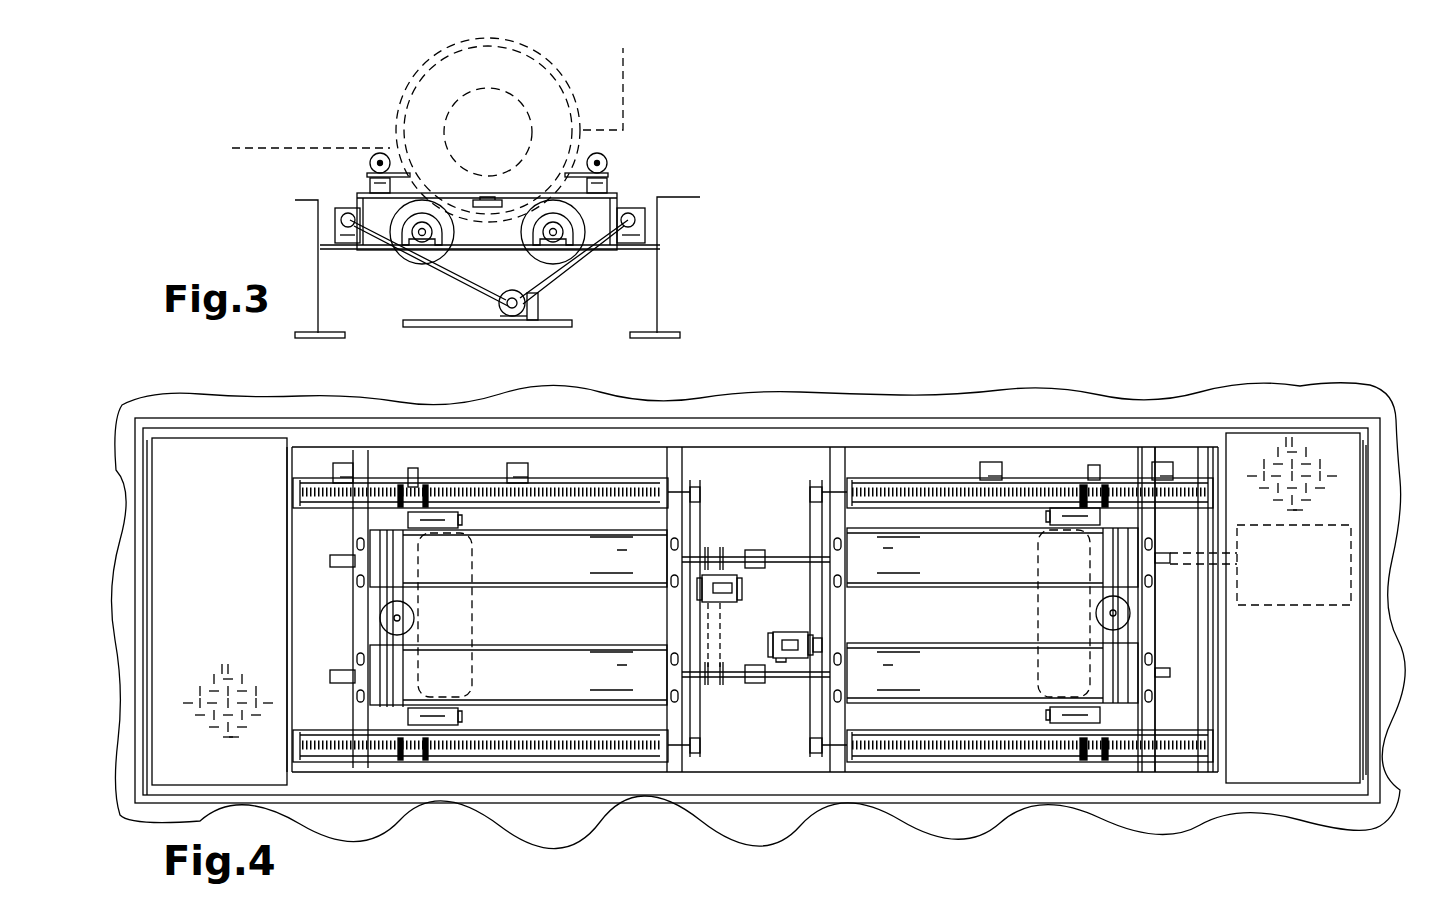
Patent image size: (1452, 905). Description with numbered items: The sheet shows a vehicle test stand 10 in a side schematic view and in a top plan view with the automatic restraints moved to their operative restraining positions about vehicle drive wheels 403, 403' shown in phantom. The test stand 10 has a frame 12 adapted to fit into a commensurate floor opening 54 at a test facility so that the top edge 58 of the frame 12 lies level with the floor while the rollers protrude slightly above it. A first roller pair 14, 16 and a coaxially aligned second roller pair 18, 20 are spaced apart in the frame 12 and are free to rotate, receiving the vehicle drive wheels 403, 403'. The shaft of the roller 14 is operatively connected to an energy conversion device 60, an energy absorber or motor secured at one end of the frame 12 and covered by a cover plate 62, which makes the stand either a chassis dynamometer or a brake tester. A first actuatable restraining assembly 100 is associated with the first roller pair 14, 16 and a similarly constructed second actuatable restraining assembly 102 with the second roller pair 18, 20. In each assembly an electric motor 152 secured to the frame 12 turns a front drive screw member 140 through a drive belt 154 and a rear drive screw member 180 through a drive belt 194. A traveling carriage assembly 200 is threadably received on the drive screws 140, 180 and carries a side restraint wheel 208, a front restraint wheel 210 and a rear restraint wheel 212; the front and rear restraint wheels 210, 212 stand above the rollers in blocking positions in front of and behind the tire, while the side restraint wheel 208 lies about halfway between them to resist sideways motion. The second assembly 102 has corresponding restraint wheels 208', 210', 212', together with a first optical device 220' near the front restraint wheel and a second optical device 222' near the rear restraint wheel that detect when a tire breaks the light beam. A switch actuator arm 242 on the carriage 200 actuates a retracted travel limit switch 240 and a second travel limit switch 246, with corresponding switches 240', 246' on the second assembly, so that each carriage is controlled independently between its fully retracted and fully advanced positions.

In FIG. 3, the vehicle test stand 10 is at (666, 170).
In FIG. 4, the vehicle test stand 10 is at (1045, 359).
In FIG. 3, the frame 12 is at (688, 197).
In FIG. 4, the frame 12 is at (908, 386).
In FIG. 4, the roller of first roller pair 14 is at (1012, 562).
In FIG. 4, the roller of first roller pair 16 is at (957, 662).
In FIG. 3, the roller of second roller pair 18 is at (546, 210).
In FIG. 4, the roller of second roller pair 18 is at (525, 562).
In FIG. 3, the roller of second roller pair 20 is at (365, 205).
In FIG. 4, the roller of second roller pair 20 is at (553, 670).
In FIG. 4, the floor opening 54 is at (1333, 416).
In FIG. 3, the top edge of the frame 58 is at (668, 195).
In FIG. 4, the top edge of the frame 58 is at (1193, 435).
In FIG. 4, the energy conversion device 60 is at (1314, 609).
In FIG. 4, the cover plate 62 is at (1328, 718).
In FIG. 4, the first actuatable restraining assembly 100 is at (1109, 459).
In FIG. 4, the second actuatable restraining assembly 102 is at (421, 460).
In FIG. 4, the front drive screw member 140 is at (952, 485).
In FIG. 3, the electric motor 152 is at (497, 305).
In FIG. 4, the electric motor 152 is at (727, 585).
In FIG. 4, the drive belt 154 is at (808, 518).
In FIG. 4, the drive screw member 180 is at (905, 760).
In FIG. 4, the drive belt 194 is at (820, 707).
In FIG. 4, the traveling carriage assembly 200 is at (1150, 636).
In FIG. 4, the side restraint wheel 208 is at (1054, 615).
In FIG. 4, the front restraint wheel 210 is at (1027, 517).
In FIG. 4, the rear restraint wheel 212 is at (1032, 715).
In FIG. 4, the retracted travel limit switch 240 is at (1212, 401).
In FIG. 4, the switch actuator arm 242 is at (1097, 472).
In FIG. 4, the second travel limit switch 246 is at (1043, 421).
In FIG. 4, the vehicle drive wheel 403 is at (1030, 613).
In FIG. 4, the side restraint wheel 208' is at (461, 618).
In FIG. 3, the front restraint wheel 210' is at (633, 139).
In FIG. 4, the front restraint wheel 210' is at (480, 444).
In FIG. 3, the rear restraint wheel 212' is at (348, 138).
In FIG. 4, the rear restraint wheel 212' is at (449, 791).
In FIG. 3, the first optical device 220' is at (516, 221).
In FIG. 3, the second optical device 222' is at (335, 178).
In FIG. 4, the retracted travel limit switch 240' is at (322, 420).
In FIG. 4, the second travel limit switch 246' is at (589, 420).
In FIG. 3, the vehicle drive wheel 403' is at (507, 129).
In FIG. 4, the vehicle drive wheel 403' is at (476, 615).